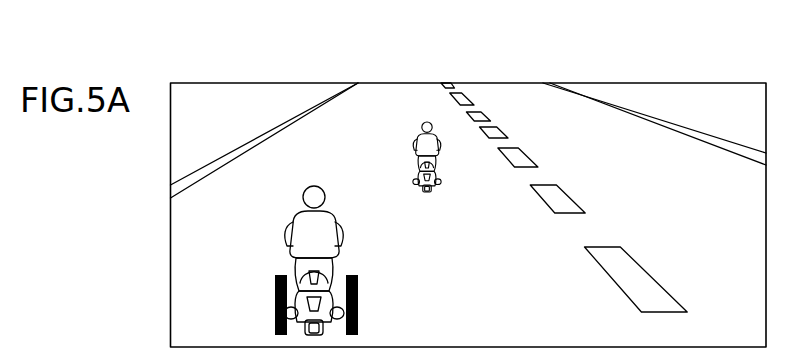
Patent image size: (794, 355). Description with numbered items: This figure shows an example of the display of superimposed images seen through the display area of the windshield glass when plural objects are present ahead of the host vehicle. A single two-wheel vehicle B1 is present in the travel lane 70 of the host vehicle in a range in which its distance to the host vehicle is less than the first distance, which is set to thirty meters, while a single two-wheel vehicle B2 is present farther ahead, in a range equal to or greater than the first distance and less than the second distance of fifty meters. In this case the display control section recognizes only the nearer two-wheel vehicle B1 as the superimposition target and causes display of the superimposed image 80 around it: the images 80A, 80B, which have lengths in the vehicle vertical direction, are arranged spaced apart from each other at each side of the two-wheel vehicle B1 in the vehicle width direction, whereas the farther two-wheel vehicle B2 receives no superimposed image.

The travel lane 70 is at (370, 114).
The two-wheel vehicle B1 is at (314, 186).
The two-wheel vehicle B2 is at (427, 121).
The superimposed image 80 is at (366, 176).
The image 80A is at (274, 303).
The image 80B is at (410, 305).